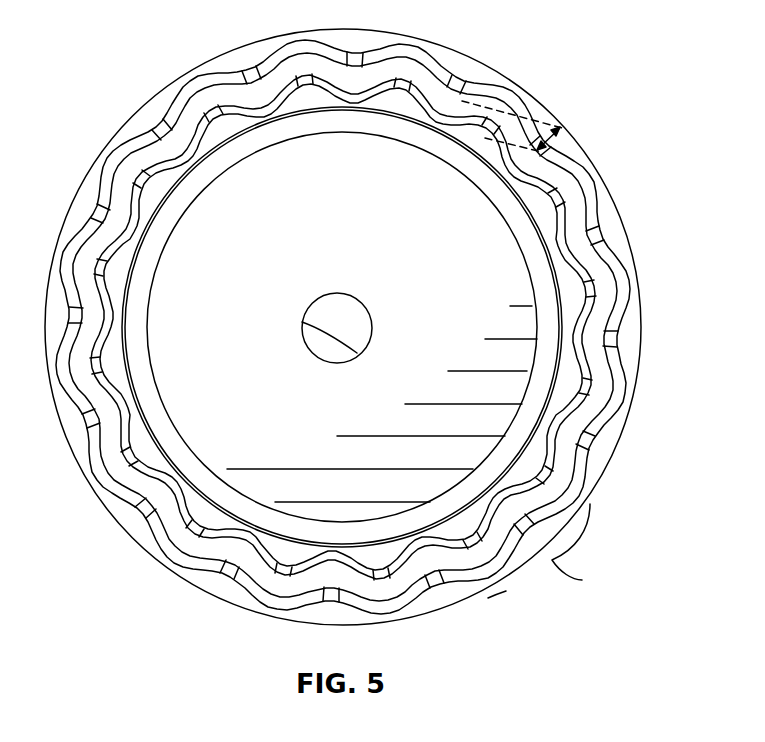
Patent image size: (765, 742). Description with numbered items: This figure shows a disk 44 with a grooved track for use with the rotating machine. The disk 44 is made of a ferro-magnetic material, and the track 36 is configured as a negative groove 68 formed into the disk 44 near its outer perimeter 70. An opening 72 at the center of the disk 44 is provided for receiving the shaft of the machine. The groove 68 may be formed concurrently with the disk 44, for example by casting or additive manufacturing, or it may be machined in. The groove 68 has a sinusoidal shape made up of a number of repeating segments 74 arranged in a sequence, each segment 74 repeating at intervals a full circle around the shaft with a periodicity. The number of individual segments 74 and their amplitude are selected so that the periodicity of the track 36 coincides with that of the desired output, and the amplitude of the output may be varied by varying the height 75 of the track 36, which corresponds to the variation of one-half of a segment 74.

The track 36 is at (628, 339).
The disk 44 is at (376, 327).
The negative groove 68 is at (600, 378).
The outer perimeter 70 is at (477, 58).
The opening 72 is at (303, 322).
The repeating segment 74 is at (580, 580).
The height of the track 75 is at (563, 140).